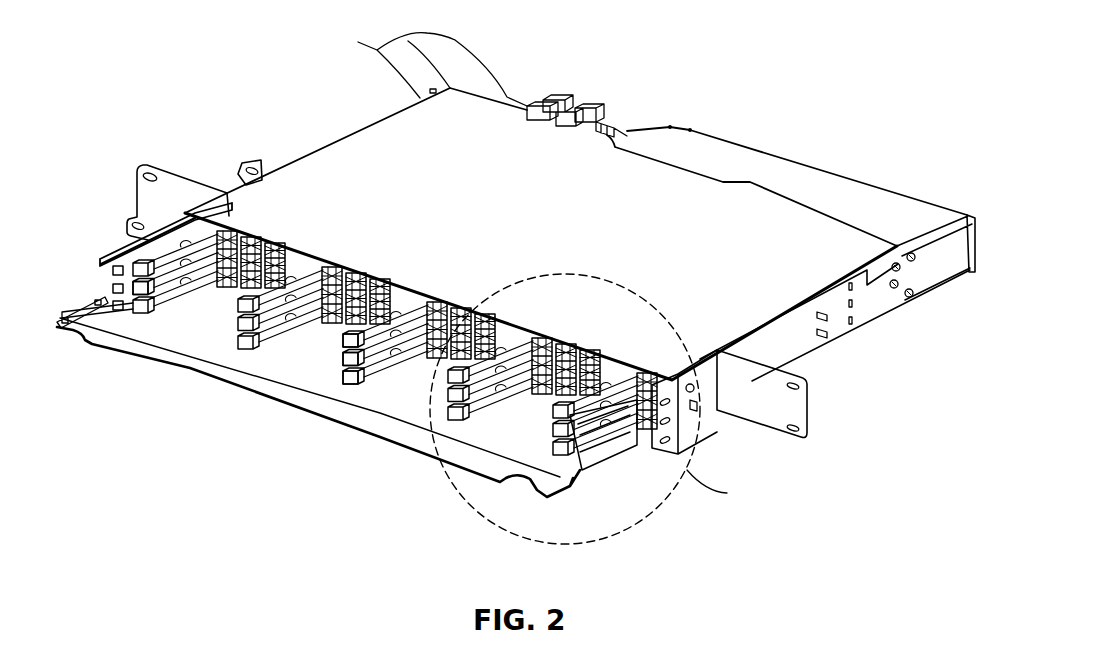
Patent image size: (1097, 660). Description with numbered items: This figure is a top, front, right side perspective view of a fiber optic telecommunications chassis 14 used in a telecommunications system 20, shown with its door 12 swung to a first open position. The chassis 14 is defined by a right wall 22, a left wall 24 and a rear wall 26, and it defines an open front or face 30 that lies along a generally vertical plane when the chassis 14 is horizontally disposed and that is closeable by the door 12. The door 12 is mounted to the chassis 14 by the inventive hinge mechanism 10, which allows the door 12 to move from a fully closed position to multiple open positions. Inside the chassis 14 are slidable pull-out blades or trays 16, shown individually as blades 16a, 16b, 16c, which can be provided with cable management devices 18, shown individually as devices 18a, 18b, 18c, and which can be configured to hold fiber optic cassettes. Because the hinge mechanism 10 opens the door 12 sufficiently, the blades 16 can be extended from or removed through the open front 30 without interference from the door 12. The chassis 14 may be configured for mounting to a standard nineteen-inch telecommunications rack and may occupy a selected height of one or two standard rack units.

The hinge mechanism 10 is at (77, 286).
The door 12 is at (87, 327).
The telecommunications chassis 14 is at (233, 182).
The slidable blades 16 is at (427, 361).
The slidable blade 16a is at (245, 292).
The slidable blade 16b is at (187, 300).
The slidable blade 16c is at (187, 222).
The cable management devices 18 is at (365, 395).
The cable management device 18a is at (341, 375).
The cable management device 18b is at (340, 358).
The cable management device 18c is at (338, 341).
The telecommunications system 20 is at (256, 76).
The right wall 22 is at (832, 327).
The left wall 24 is at (307, 153).
The rear wall 26 is at (765, 167).
The open front 30 is at (396, 383).